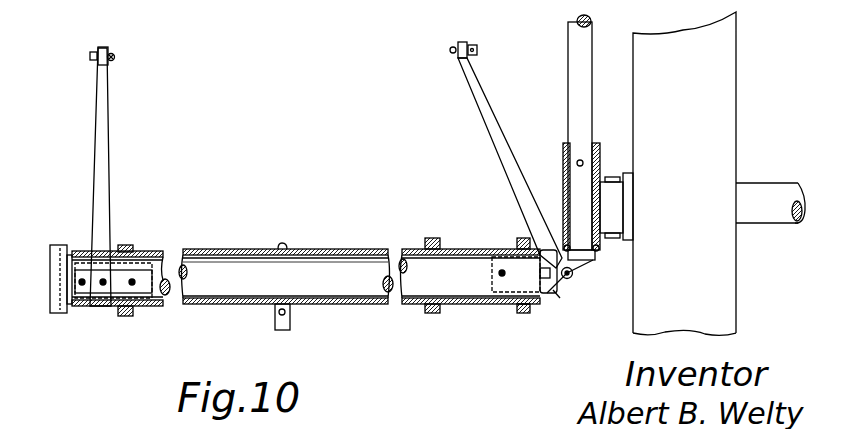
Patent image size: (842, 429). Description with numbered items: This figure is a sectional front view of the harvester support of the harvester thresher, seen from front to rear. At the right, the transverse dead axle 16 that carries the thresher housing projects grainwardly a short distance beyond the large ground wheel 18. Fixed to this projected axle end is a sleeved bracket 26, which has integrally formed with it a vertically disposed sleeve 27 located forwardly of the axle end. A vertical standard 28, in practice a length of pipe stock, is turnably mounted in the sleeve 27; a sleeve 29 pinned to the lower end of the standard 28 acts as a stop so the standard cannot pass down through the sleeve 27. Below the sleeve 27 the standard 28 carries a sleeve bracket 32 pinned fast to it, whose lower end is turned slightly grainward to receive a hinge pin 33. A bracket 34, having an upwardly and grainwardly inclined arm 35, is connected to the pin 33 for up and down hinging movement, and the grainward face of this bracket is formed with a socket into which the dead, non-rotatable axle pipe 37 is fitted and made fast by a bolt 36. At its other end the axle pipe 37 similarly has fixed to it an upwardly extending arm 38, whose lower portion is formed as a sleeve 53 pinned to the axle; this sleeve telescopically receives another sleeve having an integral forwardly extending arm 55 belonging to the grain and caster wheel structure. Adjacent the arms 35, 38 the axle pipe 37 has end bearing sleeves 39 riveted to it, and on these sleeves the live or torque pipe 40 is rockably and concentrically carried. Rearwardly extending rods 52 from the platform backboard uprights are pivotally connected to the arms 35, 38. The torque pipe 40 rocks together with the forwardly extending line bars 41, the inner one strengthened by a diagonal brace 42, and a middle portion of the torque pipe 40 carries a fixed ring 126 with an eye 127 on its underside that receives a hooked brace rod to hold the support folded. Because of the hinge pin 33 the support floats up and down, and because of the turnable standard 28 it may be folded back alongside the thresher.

The dead axle 16 is at (770, 188).
The ground wheel 18 is at (728, 262).
The sleeved bracket 26 is at (612, 202).
The vertically disposed sleeve 27 is at (600, 218).
The standard 28 is at (585, 73).
The sleeve 29 is at (600, 145).
The sleeve bracket 32 is at (596, 256).
The hinge pin 33 is at (571, 280).
The bracket 34 is at (553, 292).
The inclined arm 35 is at (490, 118).
The bolt 36 is at (540, 274).
The dead axle pipe 37 is at (367, 267).
The upwardly extending arm 38 is at (107, 132).
The end bearing sleeves 39 is at (150, 272).
The torque pipe 40 is at (340, 244).
The line bars 41 is at (524, 312).
The diagonal brace 42 is at (432, 240).
The rods 52 is at (115, 58).
The sleeve 53 is at (88, 262).
The forwardly extending arm 55 is at (58, 316).
The fixed ring 126 is at (281, 245).
The eye 127 is at (290, 320).